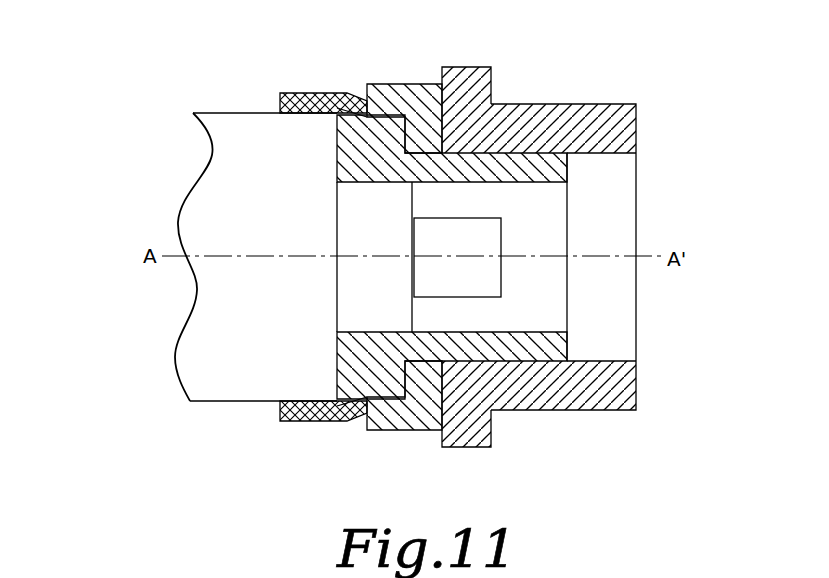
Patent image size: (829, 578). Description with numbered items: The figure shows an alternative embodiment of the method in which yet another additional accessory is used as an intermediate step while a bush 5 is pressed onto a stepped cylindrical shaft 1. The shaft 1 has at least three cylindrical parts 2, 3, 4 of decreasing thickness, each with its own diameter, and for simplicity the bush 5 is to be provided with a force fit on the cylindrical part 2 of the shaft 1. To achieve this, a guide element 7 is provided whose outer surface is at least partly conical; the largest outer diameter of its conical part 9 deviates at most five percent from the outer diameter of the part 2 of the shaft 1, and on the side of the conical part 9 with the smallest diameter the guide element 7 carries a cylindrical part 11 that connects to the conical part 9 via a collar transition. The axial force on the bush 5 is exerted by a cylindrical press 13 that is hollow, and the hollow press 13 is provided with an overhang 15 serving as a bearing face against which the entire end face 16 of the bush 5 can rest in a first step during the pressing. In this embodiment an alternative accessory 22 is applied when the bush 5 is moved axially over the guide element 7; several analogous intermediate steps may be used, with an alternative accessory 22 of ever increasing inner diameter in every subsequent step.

The stepped cylindrical shaft 1 is at (106, 53).
The cylindrical part of the shaft 2 is at (193, 382).
The cylindrical part of the shaft 3 is at (368, 312).
The cylindrical part of the shaft 4 is at (468, 278).
The bush 5 is at (308, 100).
The guide element 7 is at (557, 167).
The conical part of the guide element 9 is at (352, 120).
The cylindrical part of the guide element 11 is at (348, 171).
The cylindrical press 13 is at (593, 110).
The overhang 15 is at (482, 68).
The end face of the bush 16 is at (373, 411).
The alternative accessory 22 is at (408, 100).